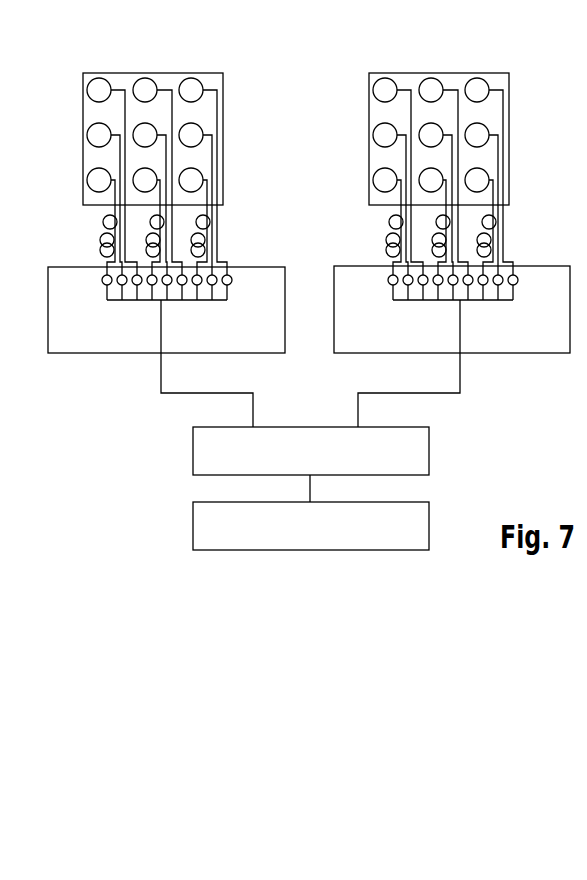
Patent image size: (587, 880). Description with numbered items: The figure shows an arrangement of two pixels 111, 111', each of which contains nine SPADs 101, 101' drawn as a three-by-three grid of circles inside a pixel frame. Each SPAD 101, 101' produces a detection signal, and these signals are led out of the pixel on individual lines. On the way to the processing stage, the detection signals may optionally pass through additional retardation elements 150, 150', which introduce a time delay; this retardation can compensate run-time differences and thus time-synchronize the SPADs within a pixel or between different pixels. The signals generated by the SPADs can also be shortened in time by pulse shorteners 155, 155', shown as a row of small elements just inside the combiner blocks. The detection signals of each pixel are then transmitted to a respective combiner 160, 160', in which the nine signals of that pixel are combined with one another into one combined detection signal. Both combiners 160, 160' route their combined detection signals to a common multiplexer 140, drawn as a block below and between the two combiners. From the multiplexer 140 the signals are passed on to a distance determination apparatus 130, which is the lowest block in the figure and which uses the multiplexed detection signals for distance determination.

The SPAD 101 is at (137, 107).
The pixel 111 is at (155, 149).
The retardation element 150 is at (123, 236).
The pulse shortener 155 is at (187, 263).
The combiner 160 is at (166, 347).
The SPAD 101' is at (421, 107).
The pixel 111' is at (441, 149).
The retardation element 150' is at (405, 236).
The pulse shortener 155' is at (475, 263).
The combiner 160' is at (452, 346).
The multiplexer 140 is at (325, 463).
The distance determination apparatus 130 is at (325, 537).